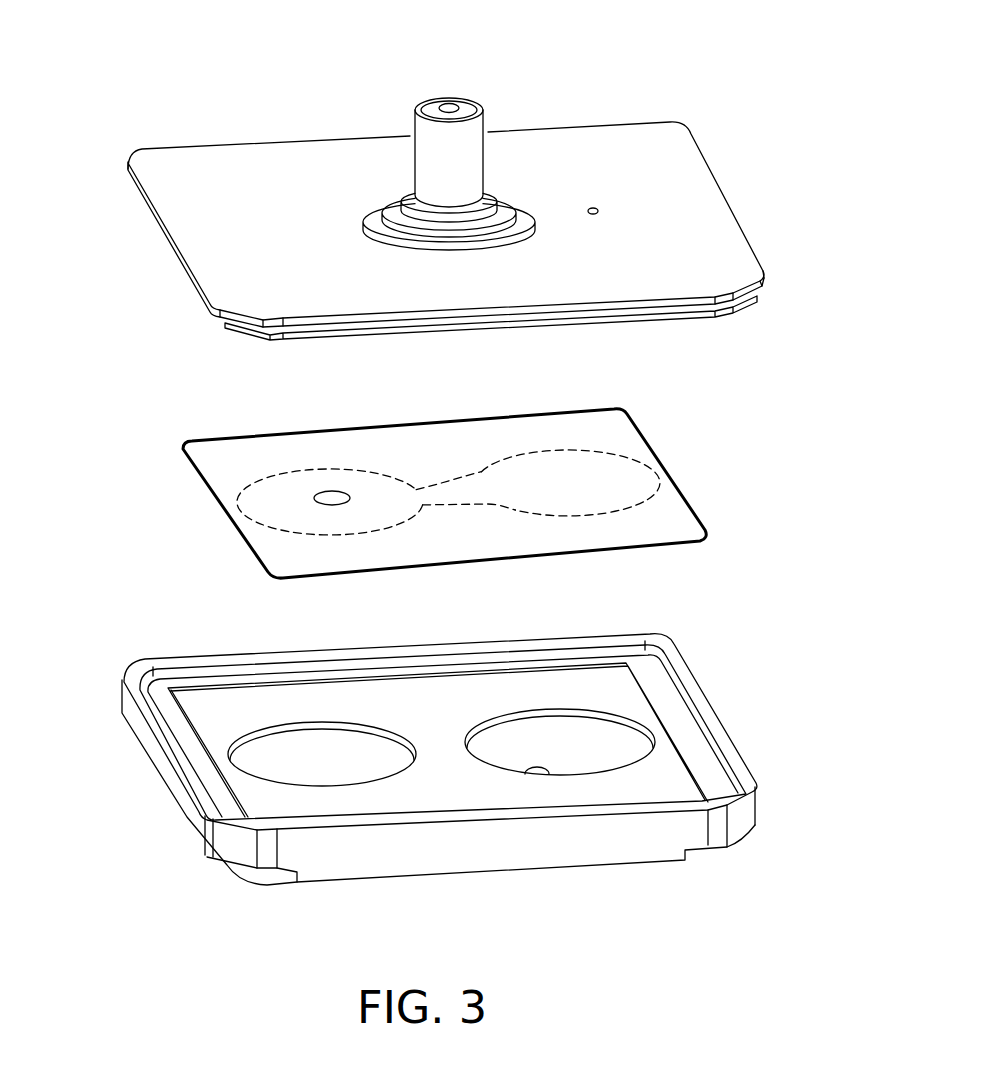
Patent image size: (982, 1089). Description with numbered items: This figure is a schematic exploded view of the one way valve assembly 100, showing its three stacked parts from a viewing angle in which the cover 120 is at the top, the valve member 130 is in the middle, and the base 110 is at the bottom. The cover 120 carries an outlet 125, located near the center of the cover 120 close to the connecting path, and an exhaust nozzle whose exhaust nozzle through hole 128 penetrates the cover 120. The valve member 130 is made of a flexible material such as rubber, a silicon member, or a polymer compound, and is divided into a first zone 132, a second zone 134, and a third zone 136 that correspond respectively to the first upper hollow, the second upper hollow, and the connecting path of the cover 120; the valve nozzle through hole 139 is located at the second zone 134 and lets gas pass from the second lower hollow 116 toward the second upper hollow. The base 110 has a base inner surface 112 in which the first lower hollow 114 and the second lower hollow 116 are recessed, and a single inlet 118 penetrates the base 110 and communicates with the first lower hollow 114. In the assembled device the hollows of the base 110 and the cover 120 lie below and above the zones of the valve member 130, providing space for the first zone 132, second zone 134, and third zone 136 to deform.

The one way valve assembly 100 is at (162, 90).
The base 110 is at (414, 791).
The base inner surface 112 is at (312, 812).
The first lower hollow 114 is at (593, 753).
The second lower hollow 116 is at (363, 763).
The inlet 118 is at (537, 775).
The cover 120 is at (150, 218).
The outlet 125 is at (450, 105).
The exhaust nozzle through hole 128 is at (593, 206).
The valve member 130 is at (207, 488).
The first zone 132 is at (560, 467).
The second zone 134 is at (370, 487).
The third zone 136 is at (455, 482).
The valve nozzle through hole 139 is at (333, 495).